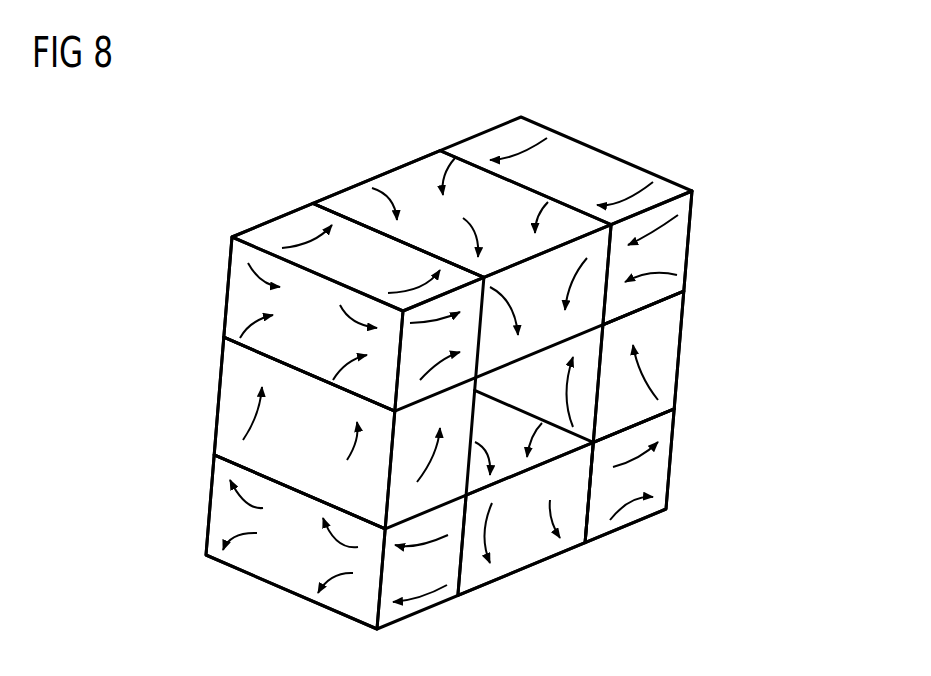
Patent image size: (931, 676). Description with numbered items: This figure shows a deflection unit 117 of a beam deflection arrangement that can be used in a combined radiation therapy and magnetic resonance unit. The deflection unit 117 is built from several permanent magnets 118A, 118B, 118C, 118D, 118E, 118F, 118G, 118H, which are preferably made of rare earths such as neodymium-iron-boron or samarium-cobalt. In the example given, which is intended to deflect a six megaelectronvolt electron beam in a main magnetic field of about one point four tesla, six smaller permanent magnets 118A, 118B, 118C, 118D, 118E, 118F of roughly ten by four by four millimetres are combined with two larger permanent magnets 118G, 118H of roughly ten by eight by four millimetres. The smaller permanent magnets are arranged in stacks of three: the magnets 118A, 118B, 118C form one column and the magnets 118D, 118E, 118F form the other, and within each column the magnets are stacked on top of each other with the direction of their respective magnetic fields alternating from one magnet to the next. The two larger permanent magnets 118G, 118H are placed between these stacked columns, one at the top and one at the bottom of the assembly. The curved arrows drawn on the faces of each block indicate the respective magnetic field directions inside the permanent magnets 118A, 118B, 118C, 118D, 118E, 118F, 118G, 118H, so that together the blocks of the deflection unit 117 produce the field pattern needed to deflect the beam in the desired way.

The deflection unit 117 is at (600, 116).
The permanent magnet 118A is at (692, 231).
The permanent magnet 118B is at (681, 343).
The permanent magnet 118C is at (670, 459).
The permanent magnet 118D is at (228, 282).
The permanent magnet 118E is at (219, 395).
The permanent magnet 118F is at (210, 511).
The permanent magnet 118G is at (409, 172).
The permanent magnet 118H is at (532, 550).